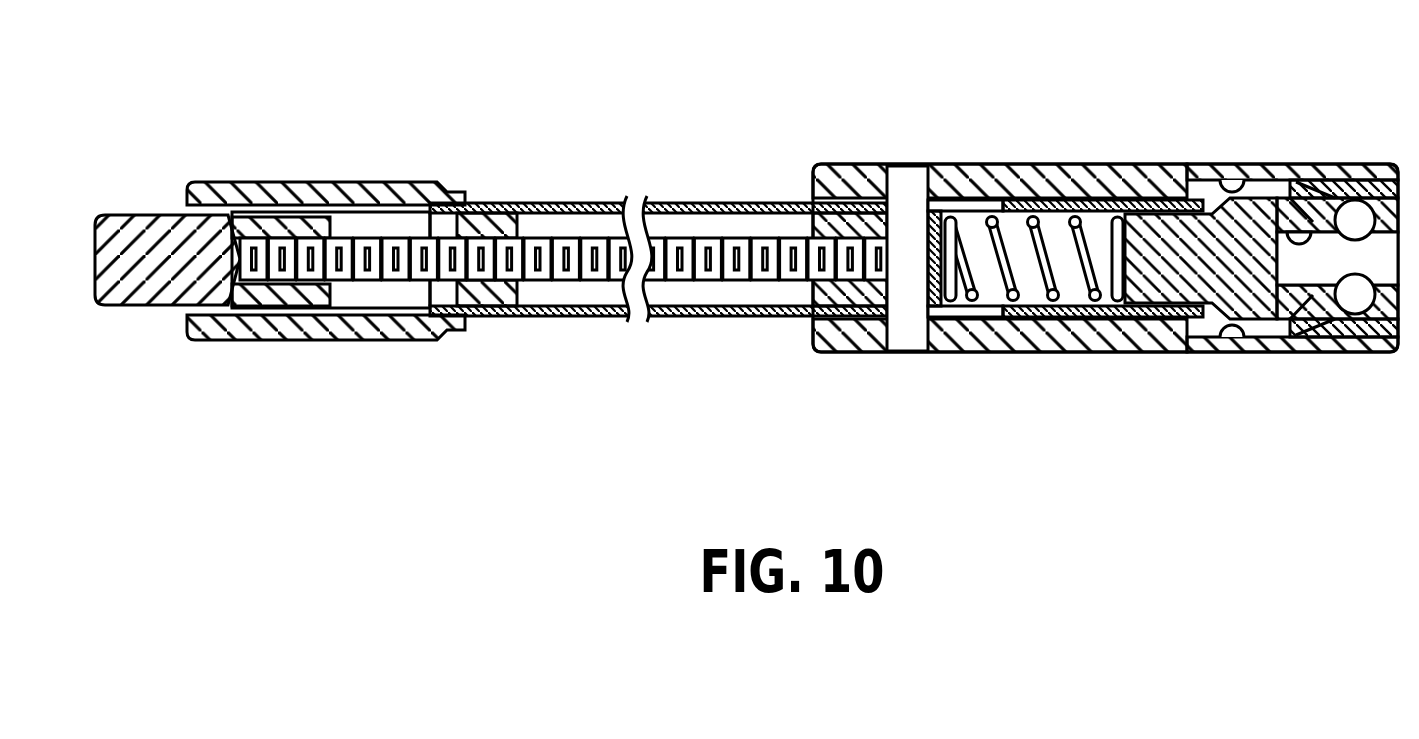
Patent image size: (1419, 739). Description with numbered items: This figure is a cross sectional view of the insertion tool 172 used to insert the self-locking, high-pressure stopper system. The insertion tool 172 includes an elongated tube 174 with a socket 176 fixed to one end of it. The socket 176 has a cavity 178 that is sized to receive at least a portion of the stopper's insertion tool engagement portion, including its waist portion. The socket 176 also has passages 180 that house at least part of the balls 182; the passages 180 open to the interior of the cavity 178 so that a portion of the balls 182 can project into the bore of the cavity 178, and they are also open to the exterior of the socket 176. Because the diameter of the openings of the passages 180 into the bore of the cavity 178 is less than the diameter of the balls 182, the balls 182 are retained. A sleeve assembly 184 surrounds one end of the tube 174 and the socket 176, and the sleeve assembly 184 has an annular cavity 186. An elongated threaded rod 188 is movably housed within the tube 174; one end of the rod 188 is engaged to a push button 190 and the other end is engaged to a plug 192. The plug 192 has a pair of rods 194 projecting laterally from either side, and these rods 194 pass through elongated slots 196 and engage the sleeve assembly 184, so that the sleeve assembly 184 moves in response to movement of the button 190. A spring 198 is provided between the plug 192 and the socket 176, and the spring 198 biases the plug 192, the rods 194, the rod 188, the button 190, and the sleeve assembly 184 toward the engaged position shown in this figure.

The insertion tool 172 is at (726, 118).
The elongated tube 174 is at (478, 320).
The socket 176 is at (1270, 322).
The cavity 178 is at (1290, 182).
The passages 180 is at (1355, 220).
The balls 182 is at (1356, 190).
The sleeve assembly 184 is at (1070, 327).
The annular cavity 186 is at (1248, 178).
The elongated threaded rod 188 is at (535, 253).
The push button 190 is at (142, 277).
The plug 192 is at (858, 295).
The rods 194 is at (903, 182).
The elongated slots 196 is at (952, 202).
The spring 198 is at (1042, 252).